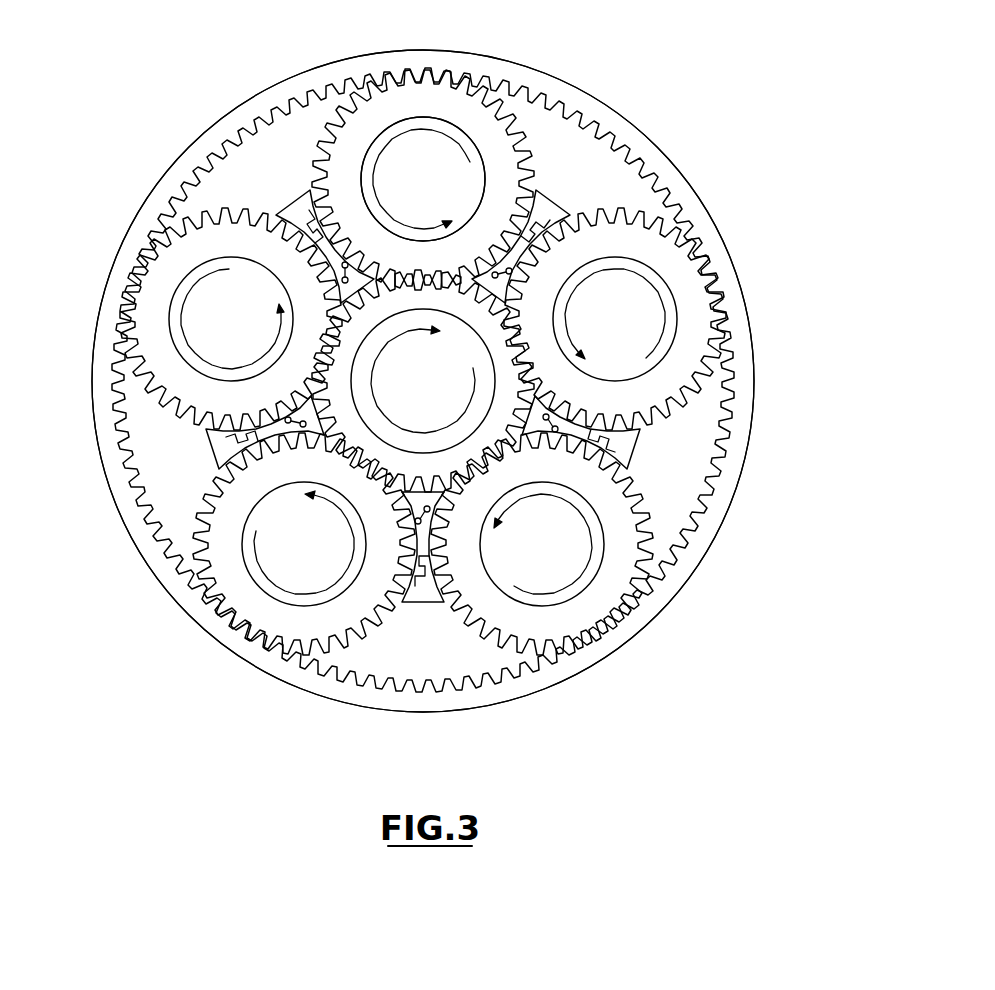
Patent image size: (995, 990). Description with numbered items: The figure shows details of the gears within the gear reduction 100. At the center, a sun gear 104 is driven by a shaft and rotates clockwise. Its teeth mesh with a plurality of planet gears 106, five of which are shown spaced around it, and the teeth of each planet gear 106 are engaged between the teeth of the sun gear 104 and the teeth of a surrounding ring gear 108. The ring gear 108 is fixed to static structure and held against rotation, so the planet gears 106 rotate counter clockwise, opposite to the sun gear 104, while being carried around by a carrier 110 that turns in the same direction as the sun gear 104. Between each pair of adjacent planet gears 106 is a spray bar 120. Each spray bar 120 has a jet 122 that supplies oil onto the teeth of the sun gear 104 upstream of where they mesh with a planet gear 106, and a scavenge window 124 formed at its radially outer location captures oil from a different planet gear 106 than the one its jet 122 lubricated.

The gear reduction 100 is at (780, 276).
The sun gear 104 is at (345, 425).
The planet gears 106 is at (387, 112).
The ring gear 108 is at (557, 97).
The carrier 110 is at (567, 162).
The spray bars 120 is at (340, 307).
The jet 122 is at (376, 253).
The scavenge window 124 is at (296, 206).